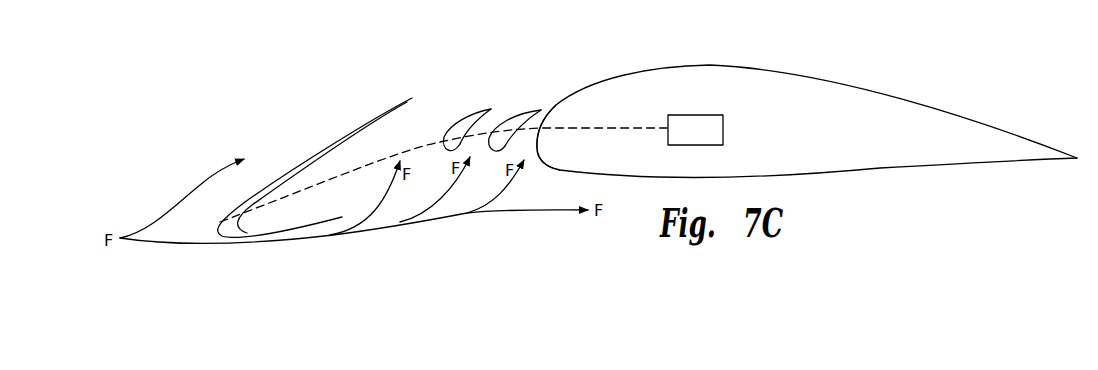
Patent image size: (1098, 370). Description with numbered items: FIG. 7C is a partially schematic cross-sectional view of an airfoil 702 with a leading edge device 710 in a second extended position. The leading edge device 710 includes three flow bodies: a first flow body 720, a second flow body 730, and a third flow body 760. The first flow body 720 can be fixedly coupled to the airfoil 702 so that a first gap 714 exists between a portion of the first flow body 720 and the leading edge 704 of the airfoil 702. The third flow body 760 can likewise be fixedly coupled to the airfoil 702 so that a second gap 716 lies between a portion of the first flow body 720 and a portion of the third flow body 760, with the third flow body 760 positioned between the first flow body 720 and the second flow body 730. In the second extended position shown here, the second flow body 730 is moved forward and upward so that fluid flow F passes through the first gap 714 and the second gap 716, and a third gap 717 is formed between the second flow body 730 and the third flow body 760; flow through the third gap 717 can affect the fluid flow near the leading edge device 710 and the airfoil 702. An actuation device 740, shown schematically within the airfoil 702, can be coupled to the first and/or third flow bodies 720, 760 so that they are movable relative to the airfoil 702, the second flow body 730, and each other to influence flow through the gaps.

The airfoil 702 is at (836, 93).
The leading edge 704 is at (541, 147).
The leading edge device 710 is at (442, 61).
The first gap 714 is at (557, 106).
The second gap 716 is at (512, 106).
The third gap 717 is at (445, 111).
The first flow body 720 is at (498, 148).
The second flow body 730 is at (214, 219).
The actuation device 740 is at (718, 115).
The third flow body 760 is at (444, 130).